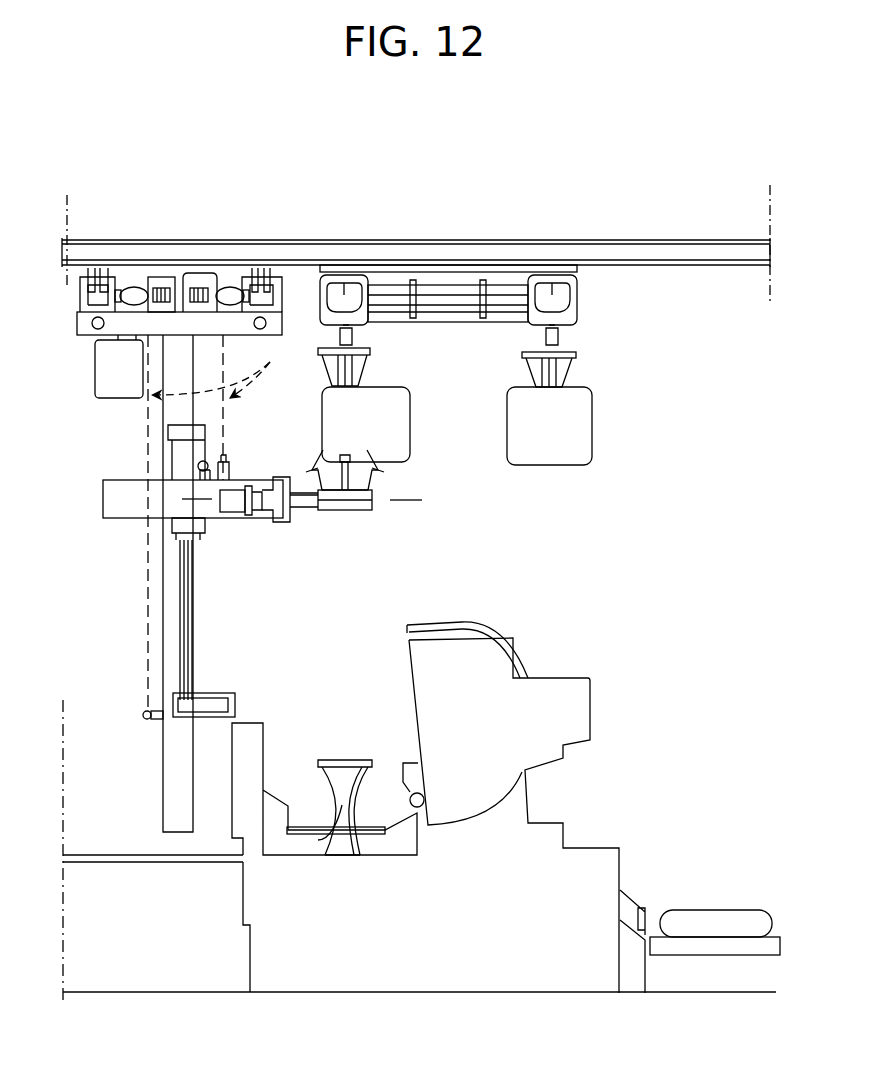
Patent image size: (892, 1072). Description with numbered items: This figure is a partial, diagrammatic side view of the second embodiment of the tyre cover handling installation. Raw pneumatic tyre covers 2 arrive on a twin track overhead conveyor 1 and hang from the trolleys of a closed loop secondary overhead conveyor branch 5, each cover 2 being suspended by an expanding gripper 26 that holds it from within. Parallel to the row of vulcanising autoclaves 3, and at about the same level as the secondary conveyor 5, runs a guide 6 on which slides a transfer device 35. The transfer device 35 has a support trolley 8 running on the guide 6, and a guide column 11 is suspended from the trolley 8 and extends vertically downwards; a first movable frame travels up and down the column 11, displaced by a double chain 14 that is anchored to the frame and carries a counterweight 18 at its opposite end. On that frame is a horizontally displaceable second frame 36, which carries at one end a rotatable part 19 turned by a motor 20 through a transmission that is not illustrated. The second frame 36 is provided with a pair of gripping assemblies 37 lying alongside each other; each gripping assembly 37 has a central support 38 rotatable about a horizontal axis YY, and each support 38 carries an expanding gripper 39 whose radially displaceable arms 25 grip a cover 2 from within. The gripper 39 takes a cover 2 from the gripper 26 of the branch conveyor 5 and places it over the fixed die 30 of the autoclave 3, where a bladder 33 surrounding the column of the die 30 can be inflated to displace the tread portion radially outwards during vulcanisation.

The overhead conveyor 1 is at (560, 265).
The pneumatic tyre cover 2 is at (378, 410).
The vulcanising autoclave 3 is at (520, 615).
The secondary overhead conveyor branch 5 is at (358, 265).
The guide 6 is at (83, 250).
The support trolley 8 is at (122, 338).
The guide column 11 is at (178, 630).
The double chain 14 is at (226, 583).
The counterweight 18 is at (147, 728).
The rotatable part 19 is at (285, 520).
The motor 20 is at (233, 513).
The radially displaceable arm 25 is at (375, 465).
The expanding gripper 26 is at (374, 376).
The fixed die 30 is at (312, 758).
The bladder 33 is at (318, 840).
The transfer device 35 is at (137, 658).
The second frame 36 is at (122, 505).
The gripping assembly 37 is at (388, 510).
The central support 38 is at (333, 510).
The expanding gripper 39 is at (385, 480).